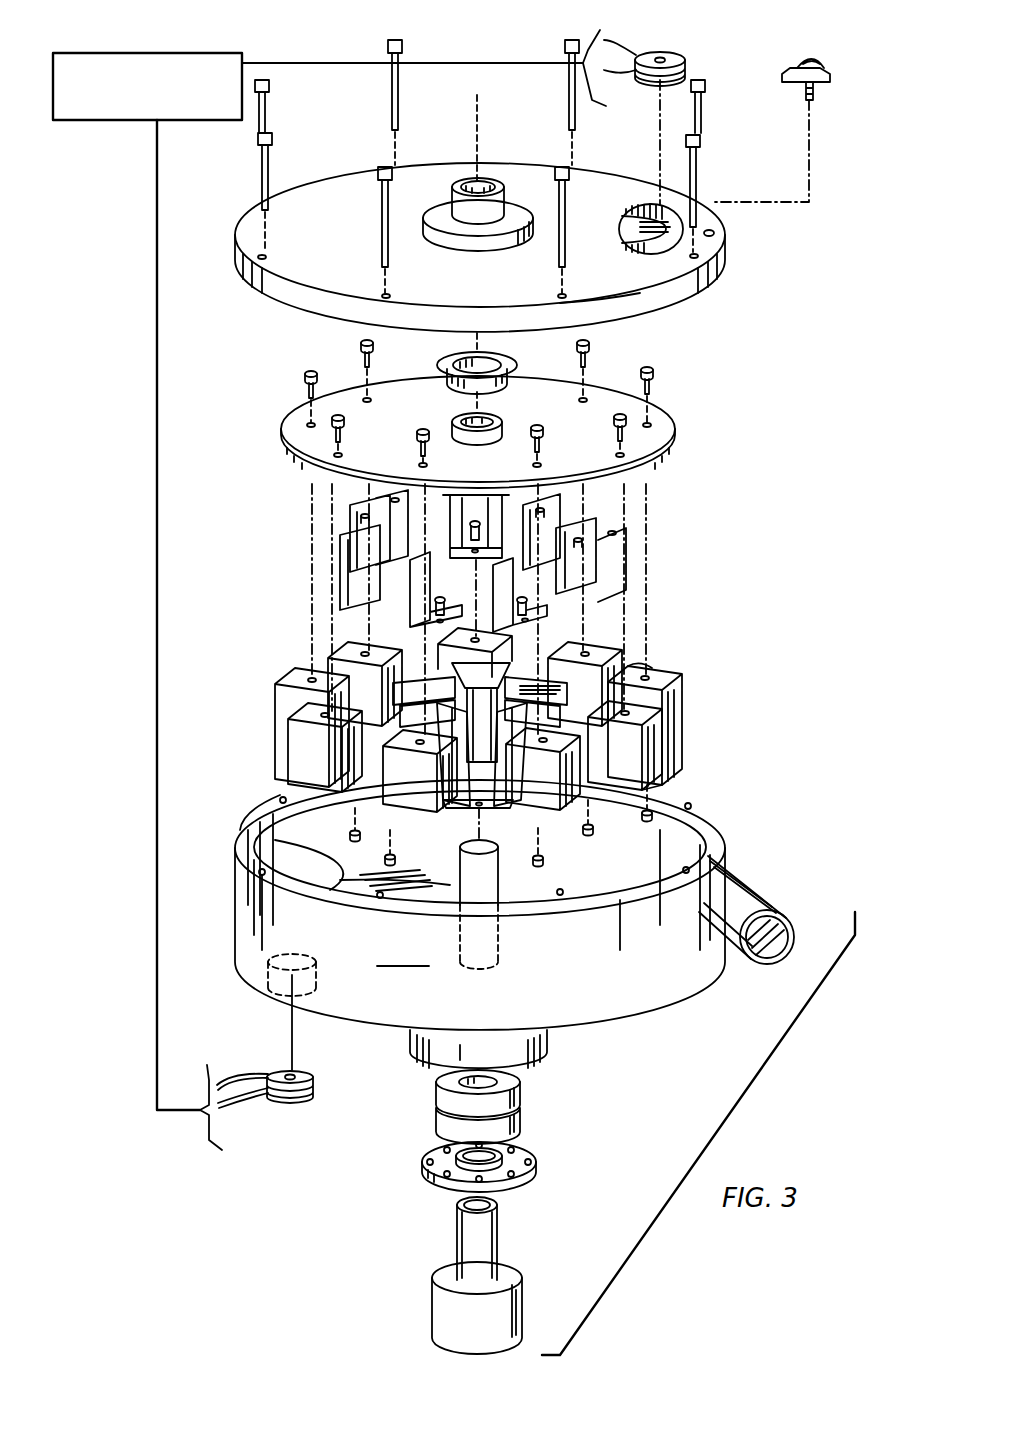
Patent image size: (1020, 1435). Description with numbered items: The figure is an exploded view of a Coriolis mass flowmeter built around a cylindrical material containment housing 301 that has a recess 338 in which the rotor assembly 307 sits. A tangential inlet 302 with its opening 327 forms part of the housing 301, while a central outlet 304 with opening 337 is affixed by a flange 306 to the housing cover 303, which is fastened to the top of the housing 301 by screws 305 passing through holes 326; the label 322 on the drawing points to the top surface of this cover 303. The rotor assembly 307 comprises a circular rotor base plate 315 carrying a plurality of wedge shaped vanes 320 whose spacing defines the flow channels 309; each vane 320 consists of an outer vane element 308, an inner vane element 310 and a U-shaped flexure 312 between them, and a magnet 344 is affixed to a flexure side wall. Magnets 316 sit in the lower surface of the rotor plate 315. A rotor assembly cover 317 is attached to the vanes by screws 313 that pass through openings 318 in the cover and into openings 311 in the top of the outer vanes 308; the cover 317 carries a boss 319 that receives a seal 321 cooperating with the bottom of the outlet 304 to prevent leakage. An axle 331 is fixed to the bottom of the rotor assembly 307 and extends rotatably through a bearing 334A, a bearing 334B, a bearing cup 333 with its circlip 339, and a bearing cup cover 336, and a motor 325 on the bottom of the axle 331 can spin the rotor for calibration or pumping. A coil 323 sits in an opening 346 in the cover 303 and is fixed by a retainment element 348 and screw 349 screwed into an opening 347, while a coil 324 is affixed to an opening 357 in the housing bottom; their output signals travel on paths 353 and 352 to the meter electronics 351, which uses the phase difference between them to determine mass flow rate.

The material containment housing 301 is at (480, 905).
The inlet 302 is at (742, 888).
The material containment housing cover 303 is at (300, 268).
The outlet 304 is at (466, 180).
The screws 305 is at (262, 160).
The flange 306 is at (425, 222).
The rotor assembly 307 is at (682, 791).
The outer vane element 308 is at (290, 700).
The flow channels 309 is at (470, 808).
The inner vane element 310 is at (452, 682).
The openings 311 is at (655, 662).
The U-shaped flexure 312 is at (340, 598).
The screws 313 is at (360, 350).
The rotor base plate 315 is at (652, 768).
The magnets 316 is at (595, 838).
The rotor assembly cover 317 is at (603, 388).
The openings 318 is at (308, 428).
The boss 319 is at (500, 418).
The wedge shaped vanes 320 is at (312, 758).
The seal 321 is at (505, 358).
The plate surface 322 is at (620, 290).
The coil 323 is at (652, 86).
The coil 324 is at (296, 1099).
The motor 325 is at (432, 1290).
The holes 326 is at (258, 253).
The opening 327 is at (772, 935).
The axle 331 is at (500, 870).
The bearing cup 333 is at (540, 1040).
The bearing 334A is at (522, 1086).
The bearing 334B is at (522, 1115).
The bearing cup cover 336 is at (540, 1162).
The opening 337 is at (487, 183).
The recess 338 is at (256, 820).
The circlip 339 is at (428, 1175).
The magnet 344 is at (560, 490).
The opening 346 is at (676, 262).
The opening 347 is at (715, 233).
The retainment element 348 is at (826, 70).
The screw 349 is at (814, 94).
The meter electronics 351 is at (130, 121).
The path 352 is at (157, 193).
The path 353 is at (365, 63).
The opening 357 is at (318, 978).